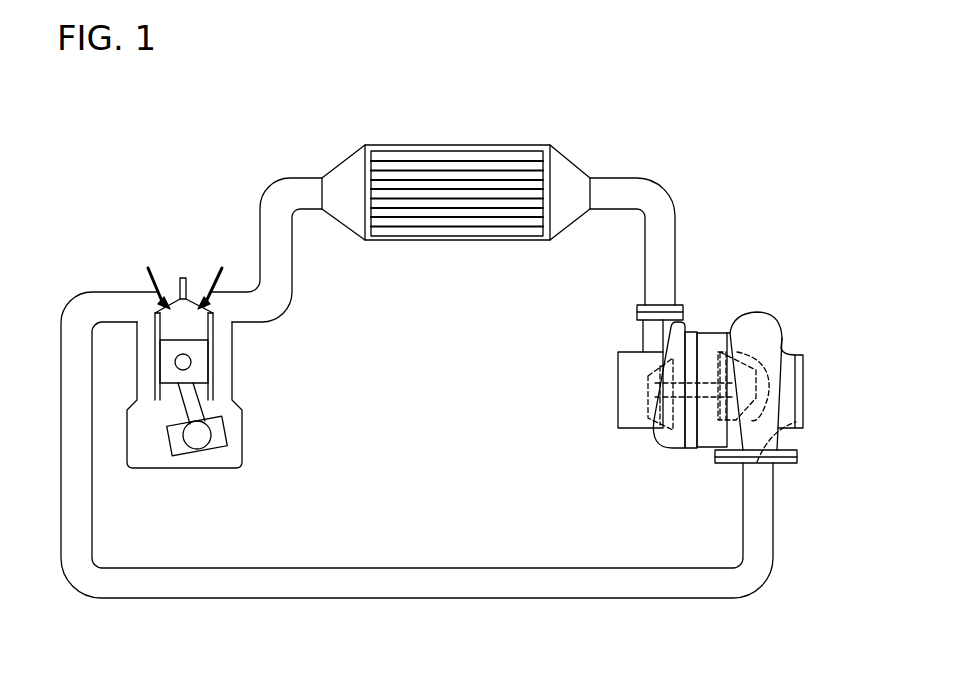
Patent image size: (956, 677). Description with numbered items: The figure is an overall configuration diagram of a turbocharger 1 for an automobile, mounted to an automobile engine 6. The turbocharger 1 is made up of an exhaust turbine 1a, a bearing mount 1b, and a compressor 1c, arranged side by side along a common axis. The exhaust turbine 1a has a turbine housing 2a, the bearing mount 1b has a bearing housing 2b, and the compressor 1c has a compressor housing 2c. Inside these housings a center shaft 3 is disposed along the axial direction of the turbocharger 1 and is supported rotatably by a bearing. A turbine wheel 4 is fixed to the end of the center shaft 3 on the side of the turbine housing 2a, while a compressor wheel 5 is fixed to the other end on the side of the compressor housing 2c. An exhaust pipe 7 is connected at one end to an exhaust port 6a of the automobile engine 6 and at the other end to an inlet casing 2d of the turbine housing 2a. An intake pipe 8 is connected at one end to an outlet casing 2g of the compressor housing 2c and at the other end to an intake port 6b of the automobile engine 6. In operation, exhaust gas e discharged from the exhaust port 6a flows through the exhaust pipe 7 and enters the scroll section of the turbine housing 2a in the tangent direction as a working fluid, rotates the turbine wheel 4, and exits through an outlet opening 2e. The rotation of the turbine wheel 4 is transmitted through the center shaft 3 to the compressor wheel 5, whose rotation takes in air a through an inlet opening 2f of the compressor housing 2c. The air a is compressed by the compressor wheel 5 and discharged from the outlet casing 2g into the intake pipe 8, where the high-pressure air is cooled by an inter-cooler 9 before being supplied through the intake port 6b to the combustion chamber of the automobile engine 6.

The turbocharger 1 is at (708, 373).
The exhaust turbine 1a is at (793, 387).
The bearing mount 1b is at (793, 387).
The compressor 1c is at (615, 391).
The turbine housing 2a is at (757, 312).
The bearing housing 2b is at (703, 332).
The compressor housing 2c is at (641, 430).
The inlet casing 2d is at (780, 452).
The outlet opening 2e is at (804, 390).
The inlet opening 2f is at (618, 362).
The outlet casing 2g is at (641, 333).
The center shaft 3 is at (709, 400).
The turbine wheel 4 is at (794, 426).
The compressor wheel 5 is at (643, 403).
The automobile engine 6 is at (197, 361).
The exhaust port 6a is at (153, 311).
The intake port 6b is at (213, 308).
The exhaust pipe 7 is at (340, 568).
The intake pipe 8 is at (635, 178).
The inter-cooler 9 is at (437, 145).
The air a is at (614, 390).
The exhaust gas e is at (77, 364).